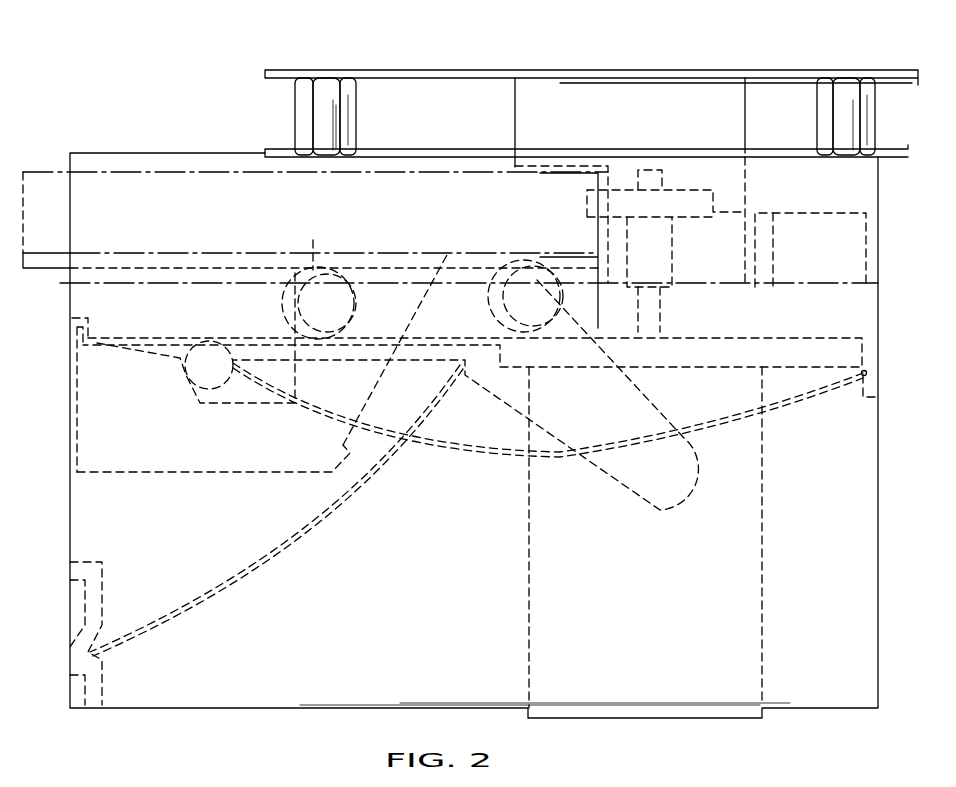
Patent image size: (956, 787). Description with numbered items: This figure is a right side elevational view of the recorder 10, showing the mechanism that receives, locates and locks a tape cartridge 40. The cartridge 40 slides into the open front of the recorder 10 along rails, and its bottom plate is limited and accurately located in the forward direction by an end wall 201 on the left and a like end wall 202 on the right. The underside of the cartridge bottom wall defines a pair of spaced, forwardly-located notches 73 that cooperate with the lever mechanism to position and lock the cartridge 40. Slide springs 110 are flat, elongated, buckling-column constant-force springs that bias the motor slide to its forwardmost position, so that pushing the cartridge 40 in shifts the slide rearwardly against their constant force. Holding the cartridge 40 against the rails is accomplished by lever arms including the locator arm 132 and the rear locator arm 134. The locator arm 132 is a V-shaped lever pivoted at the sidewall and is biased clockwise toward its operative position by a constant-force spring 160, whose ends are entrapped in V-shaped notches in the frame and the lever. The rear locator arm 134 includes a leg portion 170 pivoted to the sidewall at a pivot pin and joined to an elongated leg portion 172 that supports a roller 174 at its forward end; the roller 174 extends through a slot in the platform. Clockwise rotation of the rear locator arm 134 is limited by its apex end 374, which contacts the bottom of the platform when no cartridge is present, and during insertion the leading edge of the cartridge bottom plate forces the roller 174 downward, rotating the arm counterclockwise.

The recorder 10 is at (487, 56).
The tape cartridge 40 is at (215, 195).
The notches 73 is at (490, 263).
The slide springs 110 is at (453, 445).
The locator arm 132 is at (270, 461).
The rear locator arm 134 is at (440, 252).
The constant-force spring 160 is at (247, 572).
The leg portion 170 is at (650, 338).
The elongated leg portion 172 is at (398, 300).
The roller 174 is at (313, 255).
The end wall 201 is at (598, 268).
The end wall 202 is at (661, 138).
The apex end 374 is at (82, 372).